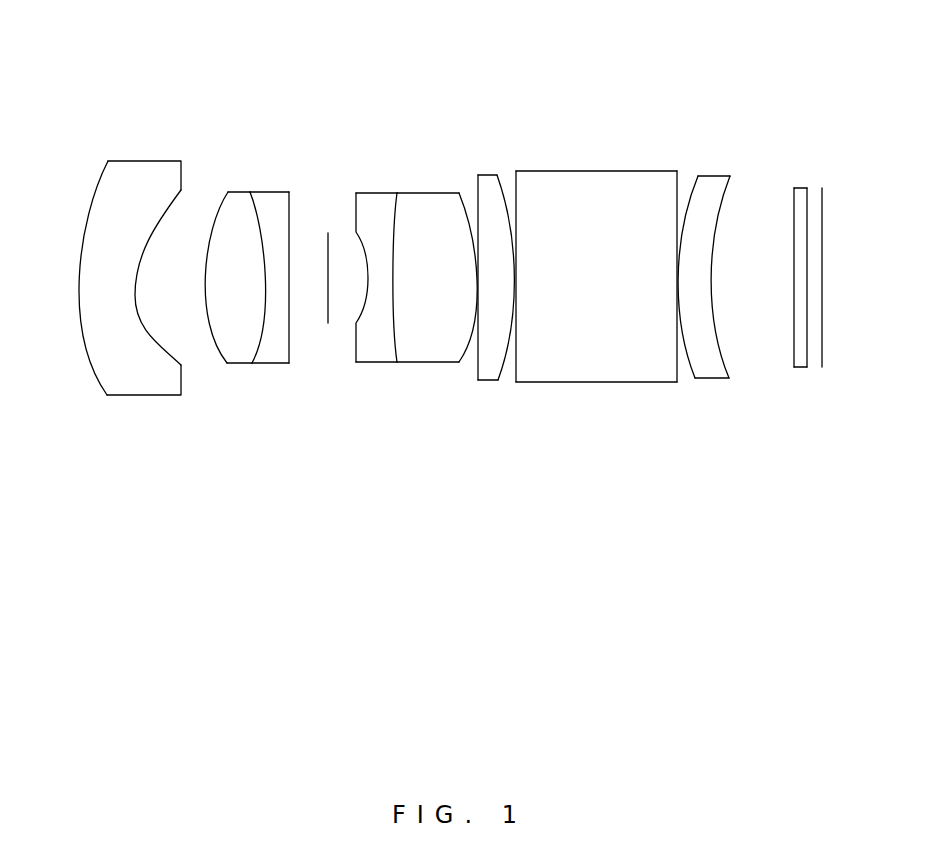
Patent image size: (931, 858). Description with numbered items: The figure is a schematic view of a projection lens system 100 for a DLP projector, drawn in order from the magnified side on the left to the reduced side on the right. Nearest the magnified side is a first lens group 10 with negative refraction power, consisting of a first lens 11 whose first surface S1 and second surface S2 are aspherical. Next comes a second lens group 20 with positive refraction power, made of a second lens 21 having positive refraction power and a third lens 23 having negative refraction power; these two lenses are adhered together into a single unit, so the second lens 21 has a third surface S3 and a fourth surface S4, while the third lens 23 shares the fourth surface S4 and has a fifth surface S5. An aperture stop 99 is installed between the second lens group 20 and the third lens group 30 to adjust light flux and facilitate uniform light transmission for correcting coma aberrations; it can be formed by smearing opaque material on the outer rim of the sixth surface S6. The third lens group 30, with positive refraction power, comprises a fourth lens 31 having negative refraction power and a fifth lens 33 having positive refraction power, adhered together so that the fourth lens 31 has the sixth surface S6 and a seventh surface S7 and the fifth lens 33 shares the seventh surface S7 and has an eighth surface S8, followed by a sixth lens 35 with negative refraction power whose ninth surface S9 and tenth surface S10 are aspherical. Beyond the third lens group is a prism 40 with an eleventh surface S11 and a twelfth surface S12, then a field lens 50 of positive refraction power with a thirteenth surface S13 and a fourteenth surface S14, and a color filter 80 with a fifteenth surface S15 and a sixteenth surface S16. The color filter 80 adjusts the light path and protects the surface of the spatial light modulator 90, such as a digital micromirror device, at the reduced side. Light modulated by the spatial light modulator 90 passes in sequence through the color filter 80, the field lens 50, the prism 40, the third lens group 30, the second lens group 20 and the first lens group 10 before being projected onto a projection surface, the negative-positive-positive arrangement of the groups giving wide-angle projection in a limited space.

The projection lens system 100 is at (438, 40).
The first lens group 10 is at (163, 141).
The first lens 11 is at (132, 161).
The second lens group 20 is at (302, 120).
The second lens 21 is at (237, 208).
The third lens 23 is at (277, 203).
The aperture stop 99 is at (327, 243).
The third lens group 30 is at (513, 108).
The fourth lens 31 is at (380, 217).
The fifth lens 33 is at (417, 210).
The sixth lens 35 is at (493, 192).
The prism 40 is at (628, 192).
The field lens 50 is at (705, 193).
The color filter 80 is at (798, 185).
The spatial light modulator 90 is at (820, 187).
The first surface S1 is at (95, 365).
The second surface S2 is at (153, 327).
The third surface S3 is at (203, 283).
The fourth surface S4 is at (260, 333).
The fifth surface S5 is at (289, 327).
The sixth surface S6 is at (365, 302).
The seventh surface S7 is at (392, 323).
The eighth surface S8 is at (476, 312).
The ninth surface S9 is at (477, 345).
The tenth surface S10 is at (507, 350).
The eleventh surface S11 is at (516, 362).
The twelfth surface S12 is at (677, 358).
The thirteenth surface S13 is at (690, 368).
The fourteenth surface S14 is at (723, 338).
The fifteenth surface S15 is at (794, 337).
The sixteenth surface S16 is at (807, 350).